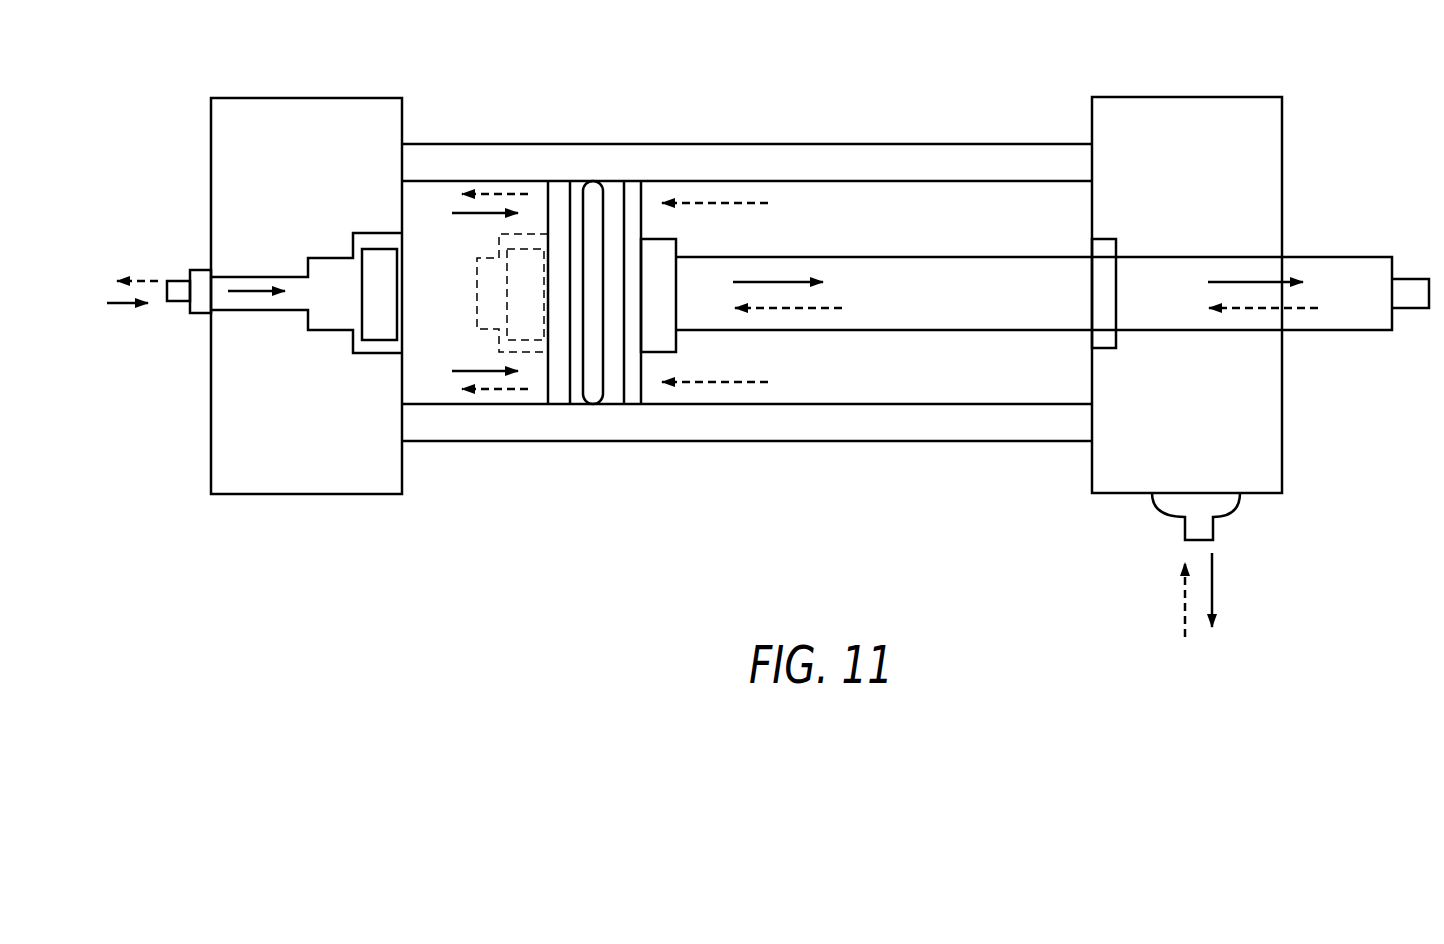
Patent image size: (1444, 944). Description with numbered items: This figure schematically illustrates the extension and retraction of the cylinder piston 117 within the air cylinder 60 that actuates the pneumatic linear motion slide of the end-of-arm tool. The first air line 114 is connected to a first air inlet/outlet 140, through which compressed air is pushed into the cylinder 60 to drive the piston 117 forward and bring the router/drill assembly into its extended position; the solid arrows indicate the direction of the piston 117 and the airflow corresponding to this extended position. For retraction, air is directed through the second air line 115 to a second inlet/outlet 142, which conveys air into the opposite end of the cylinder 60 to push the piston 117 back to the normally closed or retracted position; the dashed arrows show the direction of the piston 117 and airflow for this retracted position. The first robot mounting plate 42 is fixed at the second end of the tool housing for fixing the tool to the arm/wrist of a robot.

The first robot mounting plate 42 is at (203, 442).
The air cylinder 60 is at (860, 113).
The first air line 114 is at (117, 304).
The second air line 115 is at (1183, 600).
The cylinder piston 117 is at (658, 195).
The first air inlet/outlet 140 is at (183, 262).
The second inlet/outlet 142 is at (1213, 540).